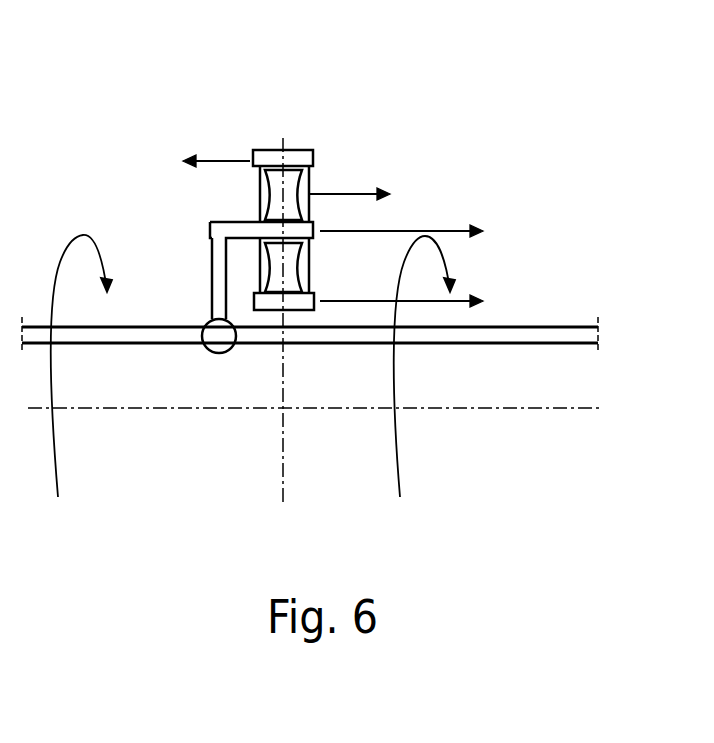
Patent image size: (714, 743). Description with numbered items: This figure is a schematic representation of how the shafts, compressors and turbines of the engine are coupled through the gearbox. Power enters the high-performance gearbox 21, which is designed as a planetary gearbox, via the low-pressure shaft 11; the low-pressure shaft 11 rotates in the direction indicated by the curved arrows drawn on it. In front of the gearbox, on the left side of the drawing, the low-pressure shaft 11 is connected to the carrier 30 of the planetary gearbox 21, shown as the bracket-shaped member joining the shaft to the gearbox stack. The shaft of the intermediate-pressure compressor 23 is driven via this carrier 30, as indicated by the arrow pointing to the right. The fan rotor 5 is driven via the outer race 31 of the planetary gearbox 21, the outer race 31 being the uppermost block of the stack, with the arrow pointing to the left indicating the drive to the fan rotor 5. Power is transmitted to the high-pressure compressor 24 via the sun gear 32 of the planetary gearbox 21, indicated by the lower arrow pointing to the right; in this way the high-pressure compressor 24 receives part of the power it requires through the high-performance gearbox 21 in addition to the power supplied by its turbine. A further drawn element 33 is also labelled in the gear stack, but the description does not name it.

The fan rotor 5 is at (201, 162).
The low-pressure shaft 11 is at (552, 327).
The high-performance gearbox 21 is at (263, 312).
The intermediate-pressure compressor 23 is at (368, 195).
The high-pressure compressor 24 is at (421, 302).
The carrier 30 is at (212, 244).
The outer race 31 is at (295, 150).
The sun gear 32 is at (291, 280).
The upper roller 33 is at (284, 193).